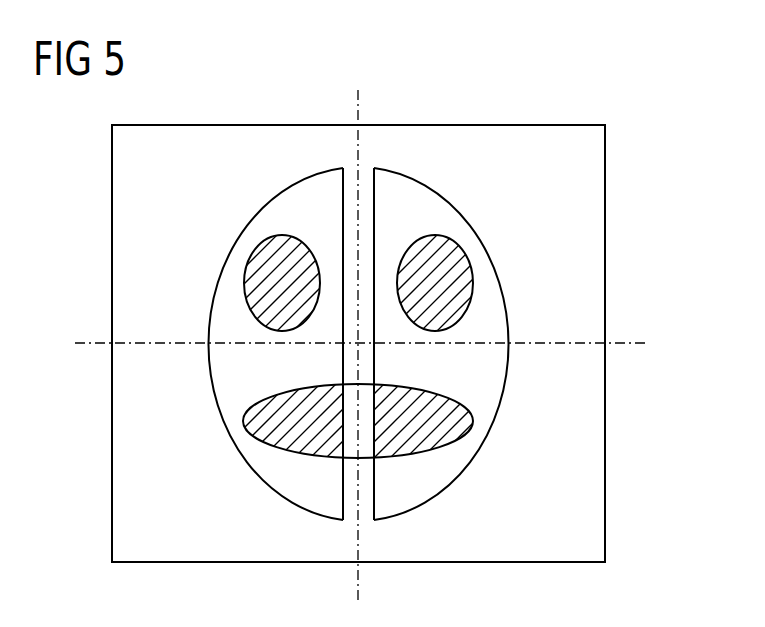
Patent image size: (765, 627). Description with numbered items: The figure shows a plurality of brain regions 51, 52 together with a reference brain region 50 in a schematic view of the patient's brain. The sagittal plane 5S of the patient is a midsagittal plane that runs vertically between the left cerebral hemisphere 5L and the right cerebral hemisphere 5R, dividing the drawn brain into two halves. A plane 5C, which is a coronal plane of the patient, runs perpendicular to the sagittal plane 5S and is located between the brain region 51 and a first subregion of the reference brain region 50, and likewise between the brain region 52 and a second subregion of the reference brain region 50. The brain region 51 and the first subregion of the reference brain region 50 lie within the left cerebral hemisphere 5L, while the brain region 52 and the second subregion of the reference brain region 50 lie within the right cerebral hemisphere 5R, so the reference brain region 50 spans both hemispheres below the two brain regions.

The sagittal plane 5S is at (358, 112).
The plane 5C is at (628, 343).
The left cerebral hemisphere 5L is at (255, 372).
The right cerebral hemisphere 5R is at (457, 372).
The brain region 51 is at (253, 281).
The brain region 52 is at (460, 282).
The reference brain region 50 is at (458, 425).